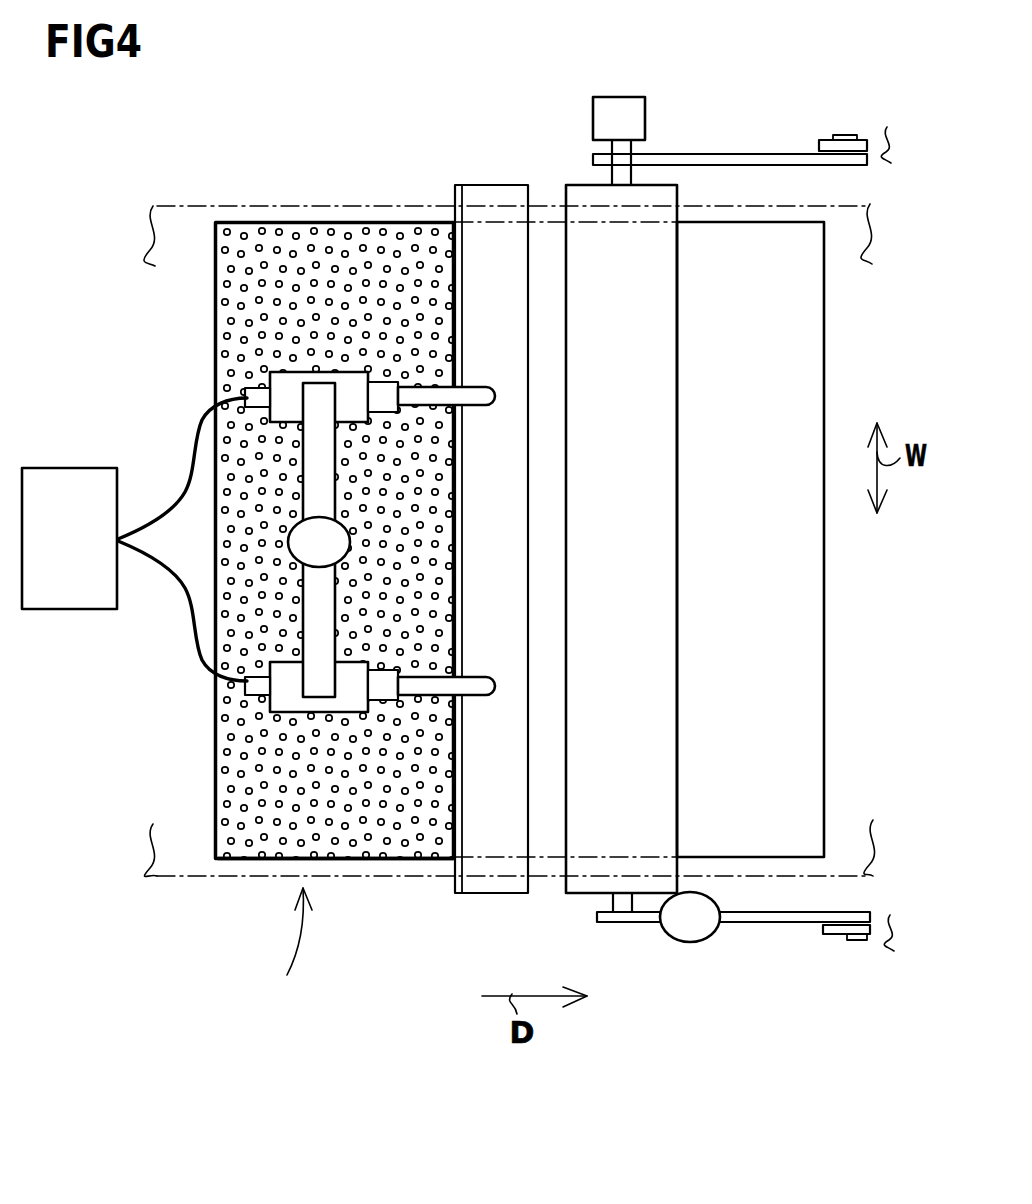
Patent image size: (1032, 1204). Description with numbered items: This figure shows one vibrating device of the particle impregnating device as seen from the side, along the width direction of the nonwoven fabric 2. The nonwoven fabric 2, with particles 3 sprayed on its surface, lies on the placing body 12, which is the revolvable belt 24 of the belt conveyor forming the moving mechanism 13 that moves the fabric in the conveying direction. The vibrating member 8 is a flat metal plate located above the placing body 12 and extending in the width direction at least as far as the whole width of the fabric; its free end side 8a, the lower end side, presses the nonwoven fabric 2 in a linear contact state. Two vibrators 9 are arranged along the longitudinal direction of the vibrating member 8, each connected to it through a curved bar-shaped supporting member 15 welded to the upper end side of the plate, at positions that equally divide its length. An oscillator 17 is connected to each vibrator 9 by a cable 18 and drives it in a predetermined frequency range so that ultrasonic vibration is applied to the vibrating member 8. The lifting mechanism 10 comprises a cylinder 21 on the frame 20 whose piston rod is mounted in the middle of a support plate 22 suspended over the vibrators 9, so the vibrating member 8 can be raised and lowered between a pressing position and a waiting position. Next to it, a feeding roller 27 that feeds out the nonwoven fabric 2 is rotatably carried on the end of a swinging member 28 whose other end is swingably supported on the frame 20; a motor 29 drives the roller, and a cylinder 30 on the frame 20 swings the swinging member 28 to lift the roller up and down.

The nonwoven fabric 2 is at (824, 606).
The particles 3 is at (353, 918).
The vibrating member 8 is at (487, 240).
The free end side 8a is at (538, 236).
The vibrator 9 is at (290, 369).
The lifting mechanism 10 is at (864, 371).
The placing body 12 is at (188, 877).
The moving mechanism 13 is at (290, 953).
The supporting member 15 is at (423, 392).
The oscillator 17 is at (65, 468).
The cable 18 is at (188, 485).
The frame 20 is at (833, 136).
The cylinder 21 is at (350, 541).
The support plate 22 is at (322, 602).
The belt 24 is at (268, 878).
The feeding roller 27 is at (677, 318).
The swinging member 28 is at (735, 154).
The motor 29 is at (593, 106).
The cylinder 30 is at (673, 942).